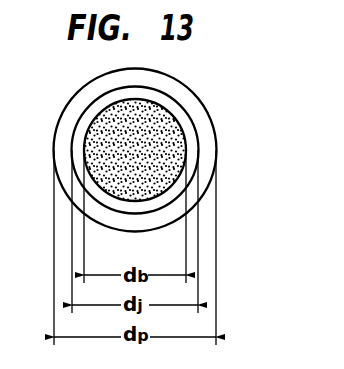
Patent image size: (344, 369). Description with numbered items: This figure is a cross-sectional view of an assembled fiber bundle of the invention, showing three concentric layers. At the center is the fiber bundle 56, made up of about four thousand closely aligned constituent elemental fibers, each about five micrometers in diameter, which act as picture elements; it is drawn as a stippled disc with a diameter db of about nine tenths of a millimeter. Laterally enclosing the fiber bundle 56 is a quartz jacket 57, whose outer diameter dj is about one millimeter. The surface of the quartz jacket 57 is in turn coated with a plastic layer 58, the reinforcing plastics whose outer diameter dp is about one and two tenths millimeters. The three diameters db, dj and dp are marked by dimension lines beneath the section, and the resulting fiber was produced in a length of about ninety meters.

The fiber bundle 56 is at (155, 135).
The quartz jacket 57 is at (192, 143).
The plastic layer 58 is at (183, 97).